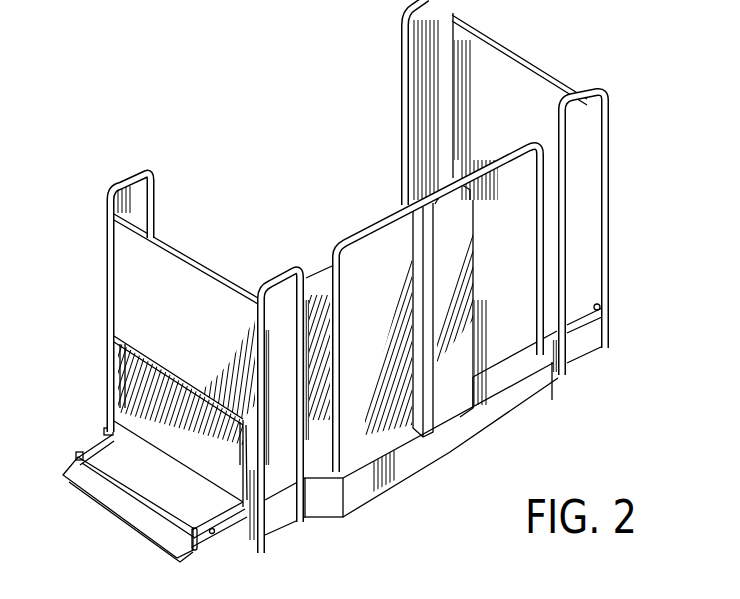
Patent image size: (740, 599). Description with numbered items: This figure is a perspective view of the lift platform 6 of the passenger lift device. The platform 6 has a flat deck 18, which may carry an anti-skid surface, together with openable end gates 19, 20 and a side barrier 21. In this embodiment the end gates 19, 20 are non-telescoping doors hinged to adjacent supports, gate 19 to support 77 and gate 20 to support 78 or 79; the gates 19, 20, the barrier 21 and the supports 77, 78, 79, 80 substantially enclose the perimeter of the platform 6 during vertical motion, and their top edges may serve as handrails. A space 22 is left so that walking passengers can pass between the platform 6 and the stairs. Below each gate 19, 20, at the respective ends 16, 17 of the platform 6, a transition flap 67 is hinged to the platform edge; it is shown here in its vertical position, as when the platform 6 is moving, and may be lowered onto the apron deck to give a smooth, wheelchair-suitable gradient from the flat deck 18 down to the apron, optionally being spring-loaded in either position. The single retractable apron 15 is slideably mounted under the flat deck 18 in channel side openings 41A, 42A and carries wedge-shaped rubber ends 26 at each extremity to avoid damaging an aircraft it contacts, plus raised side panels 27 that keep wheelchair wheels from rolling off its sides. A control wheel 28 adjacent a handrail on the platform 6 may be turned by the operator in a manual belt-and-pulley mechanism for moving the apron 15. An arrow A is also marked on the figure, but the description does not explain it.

The platform 6 is at (402, 474).
The apron 15 is at (182, 517).
The end of platform 16 is at (105, 388).
The end of platform 17 is at (620, 230).
The flat deck 18 is at (440, 458).
The openable end gate 19 is at (182, 321).
The openable end gate 20 is at (537, 68).
The side barrier 21 is at (540, 385).
The space 22 is at (234, 215).
The wedge-shaped rubber end 26 is at (130, 516).
The raised side panel 27 is at (78, 455).
The control wheel 28 is at (462, 208).
The channel side opening 41A is at (237, 536).
The channel side opening 42A is at (106, 431).
The transition flap 67 is at (210, 457).
The support panel 77 is at (152, 184).
The support panel 78 is at (612, 108).
The support panel 79 is at (458, 14).
The support 80 is at (298, 262).
The view direction arrow A is at (362, 524).